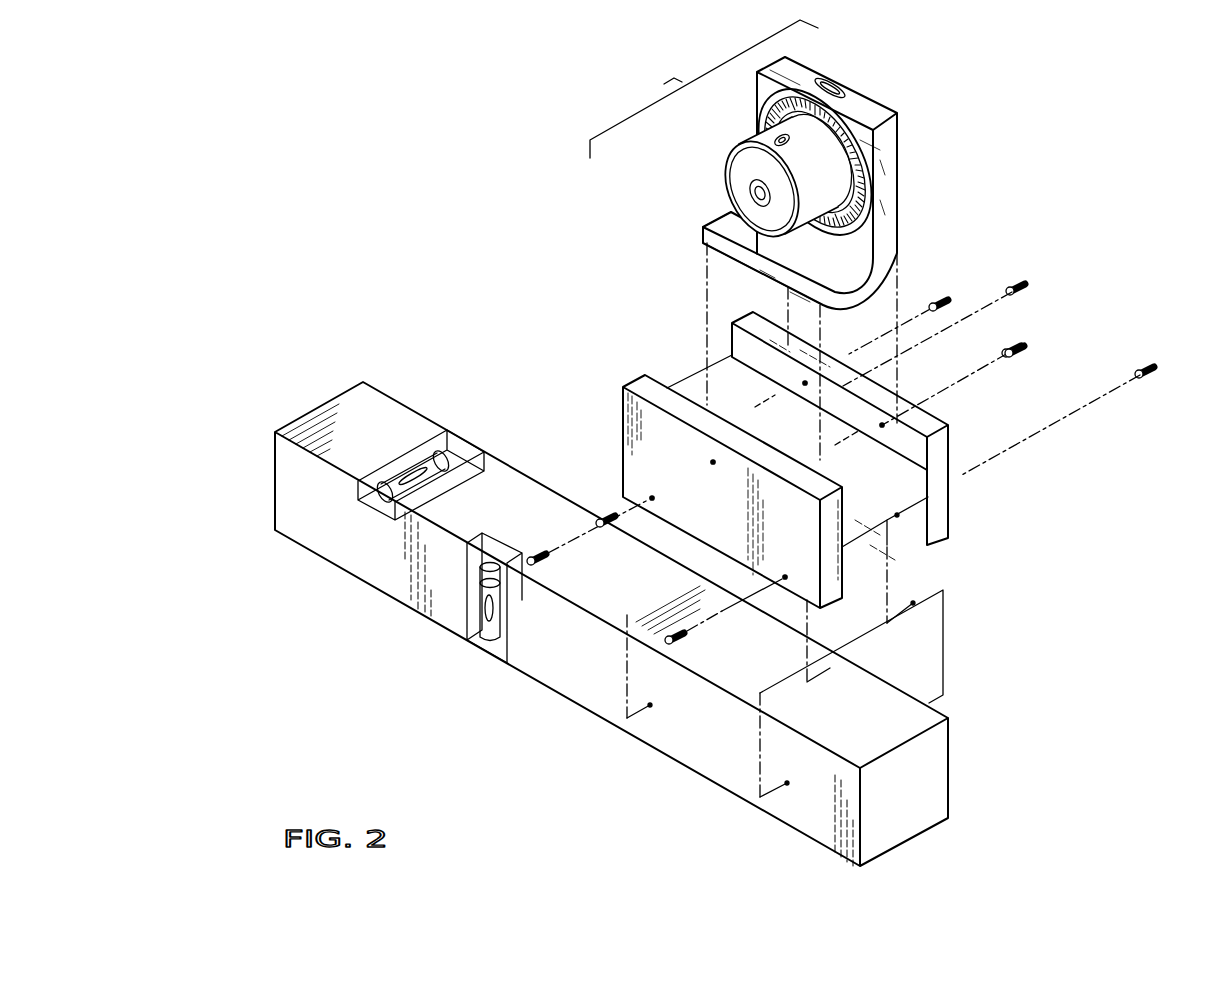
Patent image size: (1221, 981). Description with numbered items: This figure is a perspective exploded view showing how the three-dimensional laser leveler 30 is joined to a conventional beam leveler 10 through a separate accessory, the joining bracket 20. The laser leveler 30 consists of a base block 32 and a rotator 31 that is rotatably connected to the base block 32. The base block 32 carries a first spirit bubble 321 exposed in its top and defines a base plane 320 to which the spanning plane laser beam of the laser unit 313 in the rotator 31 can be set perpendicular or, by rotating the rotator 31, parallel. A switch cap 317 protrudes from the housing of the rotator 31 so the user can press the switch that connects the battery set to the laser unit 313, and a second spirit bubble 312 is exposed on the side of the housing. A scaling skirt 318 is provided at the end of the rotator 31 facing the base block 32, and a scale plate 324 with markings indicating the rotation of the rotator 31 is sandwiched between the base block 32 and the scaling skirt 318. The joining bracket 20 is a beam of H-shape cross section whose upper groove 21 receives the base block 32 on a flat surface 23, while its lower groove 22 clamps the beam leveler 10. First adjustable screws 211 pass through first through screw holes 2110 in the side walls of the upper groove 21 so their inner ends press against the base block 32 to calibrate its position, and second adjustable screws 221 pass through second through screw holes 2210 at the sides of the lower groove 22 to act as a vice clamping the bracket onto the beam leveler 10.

The beam leveler 10 is at (707, 553).
The joining bracket 20 is at (834, 506).
The upper groove 21 is at (803, 479).
The lower groove 22 is at (868, 547).
The flat surface 23 is at (805, 433).
The first adjustable screws 211 is at (939, 300).
The second adjustable screws 221 is at (536, 566).
The first through screw holes 2110 is at (713, 460).
The second through screw holes 2210 is at (652, 496).
The 3D laser leveler 30 is at (787, 164).
The rotator 31 is at (759, 162).
The base block 32 is at (843, 175).
The second spirit bubble 312 is at (852, 162).
The laser unit 313 is at (765, 136).
The switch cap 317 is at (752, 198).
The scaling skirt 318 is at (868, 122).
The base plane 320 is at (745, 288).
The first spirit bubble 321 is at (836, 90).
The scale plate 324 is at (848, 168).